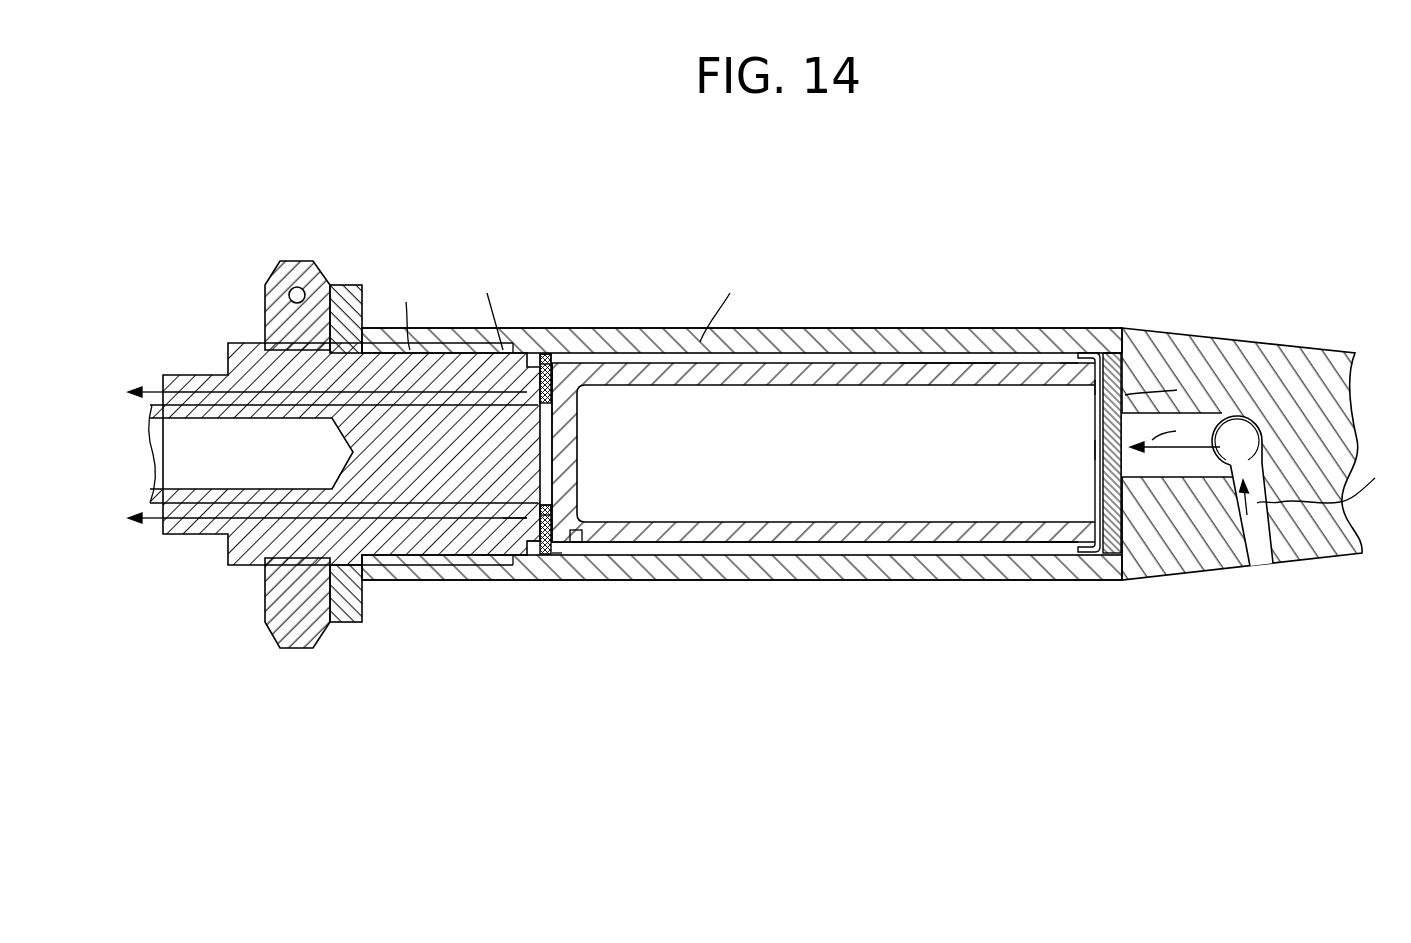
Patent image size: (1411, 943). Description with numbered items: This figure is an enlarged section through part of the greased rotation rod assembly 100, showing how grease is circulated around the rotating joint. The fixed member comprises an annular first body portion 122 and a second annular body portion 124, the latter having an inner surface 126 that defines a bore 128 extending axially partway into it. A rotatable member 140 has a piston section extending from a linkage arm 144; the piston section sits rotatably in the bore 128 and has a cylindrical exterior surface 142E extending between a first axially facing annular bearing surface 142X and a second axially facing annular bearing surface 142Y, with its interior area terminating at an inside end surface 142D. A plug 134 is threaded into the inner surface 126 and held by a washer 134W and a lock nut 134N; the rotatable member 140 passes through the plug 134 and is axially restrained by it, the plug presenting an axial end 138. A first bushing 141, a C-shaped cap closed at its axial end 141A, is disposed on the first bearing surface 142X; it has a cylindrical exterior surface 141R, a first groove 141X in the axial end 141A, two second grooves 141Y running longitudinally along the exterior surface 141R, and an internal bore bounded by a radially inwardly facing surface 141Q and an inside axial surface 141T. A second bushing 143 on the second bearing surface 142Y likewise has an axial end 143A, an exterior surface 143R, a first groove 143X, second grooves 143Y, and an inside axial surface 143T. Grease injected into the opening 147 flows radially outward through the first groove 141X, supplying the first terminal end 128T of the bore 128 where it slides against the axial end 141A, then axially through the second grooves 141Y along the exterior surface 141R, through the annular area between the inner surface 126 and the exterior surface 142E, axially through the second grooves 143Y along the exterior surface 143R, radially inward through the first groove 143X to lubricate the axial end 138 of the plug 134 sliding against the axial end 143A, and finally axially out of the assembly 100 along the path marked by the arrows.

The greased rotation rod assembly 100 is at (1062, 158).
The annular first body portion 122 is at (1242, 433).
The second annular body portion 124 is at (863, 336).
The inner surface 126 is at (786, 354).
The bore 128 is at (949, 359).
The first terminal end 128T is at (1060, 520).
The plug 134 is at (243, 365).
The lock nut 134N is at (297, 276).
The washer 134W is at (351, 286).
The axial end 138 is at (554, 372).
The rotatable member 140 is at (150, 499).
The first bushing 141 is at (1090, 552).
The axial end 141A is at (1122, 497).
The radially inwardly facing surface 141Q is at (1094, 386).
The exterior surface 141R is at (1097, 354).
The inside axial surface 141T is at (1095, 451).
The first groove 141X is at (1125, 358).
The second grooves 141Y is at (1114, 354).
The inside end surface 142D is at (580, 418).
The cylindrical exterior surface 142E is at (805, 545).
The first axially facing annular bearing surface 142X is at (1094, 390).
The second axially facing annular bearing surface 142Y is at (554, 397).
The second bushing 143 is at (545, 355).
The axial end 143A is at (510, 520).
The exterior surface 143R is at (549, 354).
The inside axial surface 143T is at (551, 508).
The first groove 143X is at (531, 545).
The second grooves 143Y is at (562, 554).
The linkage arm 144 is at (352, 447).
The opening 147 is at (1259, 545).